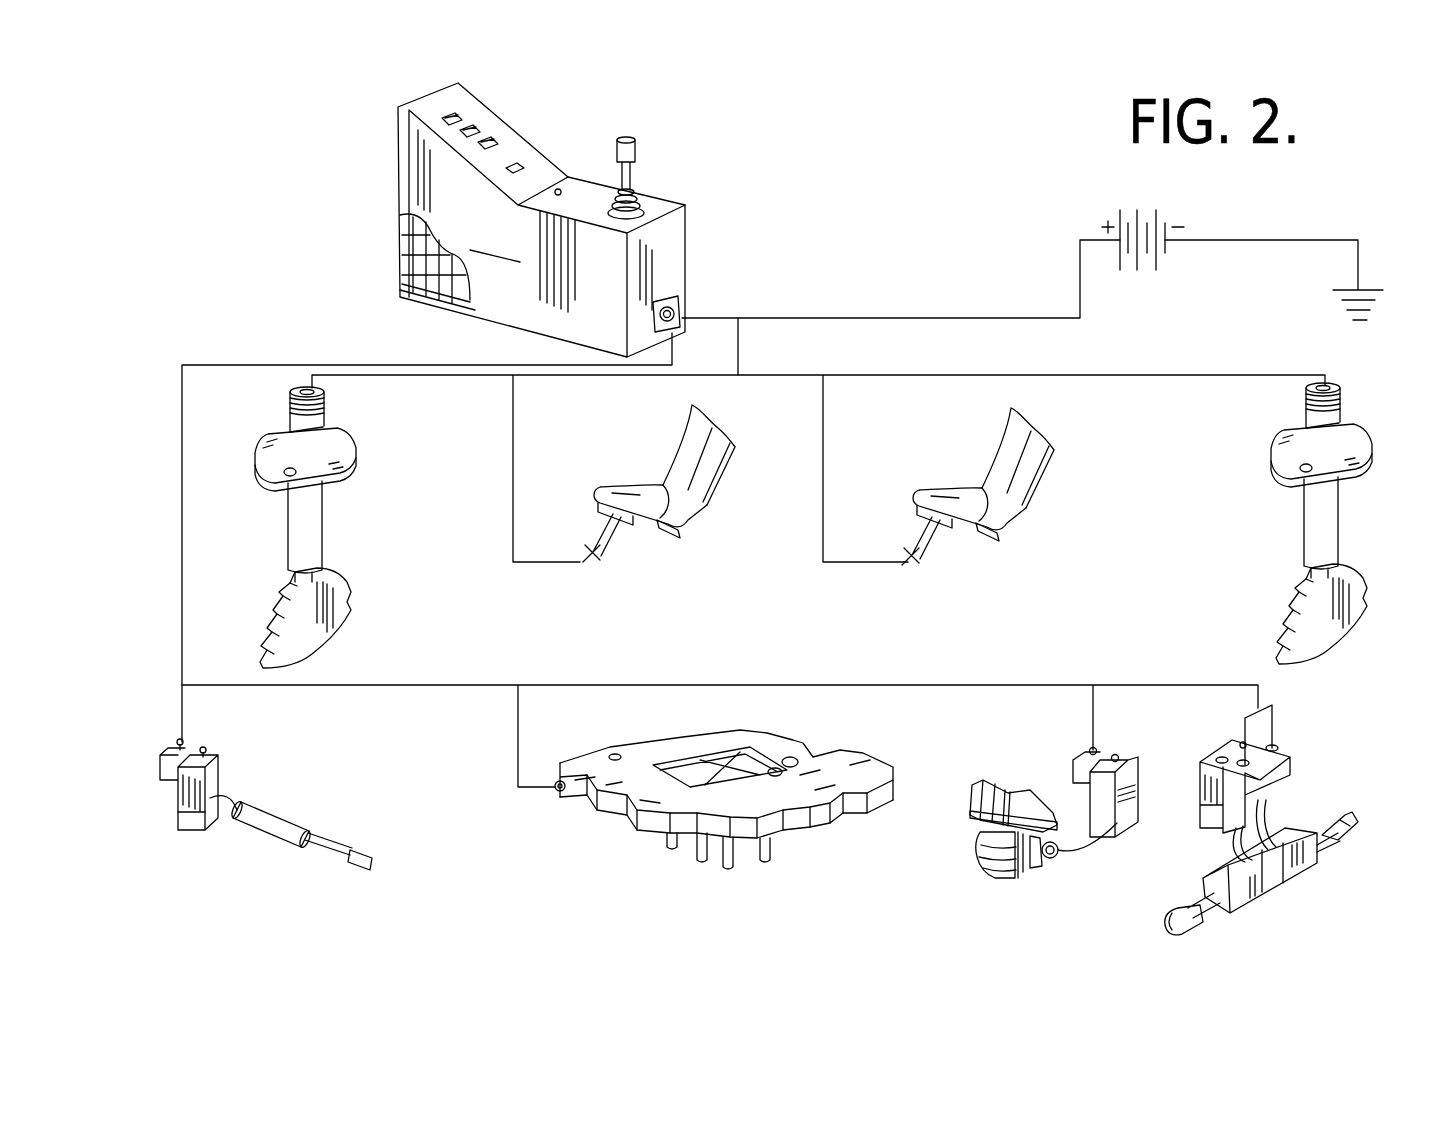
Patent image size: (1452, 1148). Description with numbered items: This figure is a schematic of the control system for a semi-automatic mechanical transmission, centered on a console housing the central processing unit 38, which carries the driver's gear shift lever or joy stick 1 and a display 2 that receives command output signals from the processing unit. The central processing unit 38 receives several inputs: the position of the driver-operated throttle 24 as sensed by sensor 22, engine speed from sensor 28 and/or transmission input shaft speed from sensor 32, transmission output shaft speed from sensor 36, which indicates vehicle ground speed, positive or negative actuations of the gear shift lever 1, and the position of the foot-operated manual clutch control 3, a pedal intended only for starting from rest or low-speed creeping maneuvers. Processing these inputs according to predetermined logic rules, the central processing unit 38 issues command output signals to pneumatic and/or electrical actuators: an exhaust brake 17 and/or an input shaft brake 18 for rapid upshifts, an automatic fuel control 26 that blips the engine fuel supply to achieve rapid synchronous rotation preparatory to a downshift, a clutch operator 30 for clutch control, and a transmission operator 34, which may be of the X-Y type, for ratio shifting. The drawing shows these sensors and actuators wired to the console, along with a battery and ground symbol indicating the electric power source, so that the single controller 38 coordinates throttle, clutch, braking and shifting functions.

The display 2 is at (531, 126).
The gear shift lever 1 is at (636, 153).
The central processing unit 38 is at (530, 287).
The engine speed sensor 28 is at (271, 525).
The transmission input shaft speed sensor 32 is at (275, 527).
The manual clutch control 3 is at (621, 533).
The throttle 24 is at (938, 551).
The throttle position sensor 22 is at (948, 512).
The transmission output shaft speed sensor 36 is at (1283, 552).
The clutch operator 30 is at (306, 799).
The transmission operator 34 is at (842, 742).
The input shaft brake 18 is at (1116, 746).
The exhaust brake 17 is at (1121, 791).
The automatic fuel control 26 is at (1297, 772).